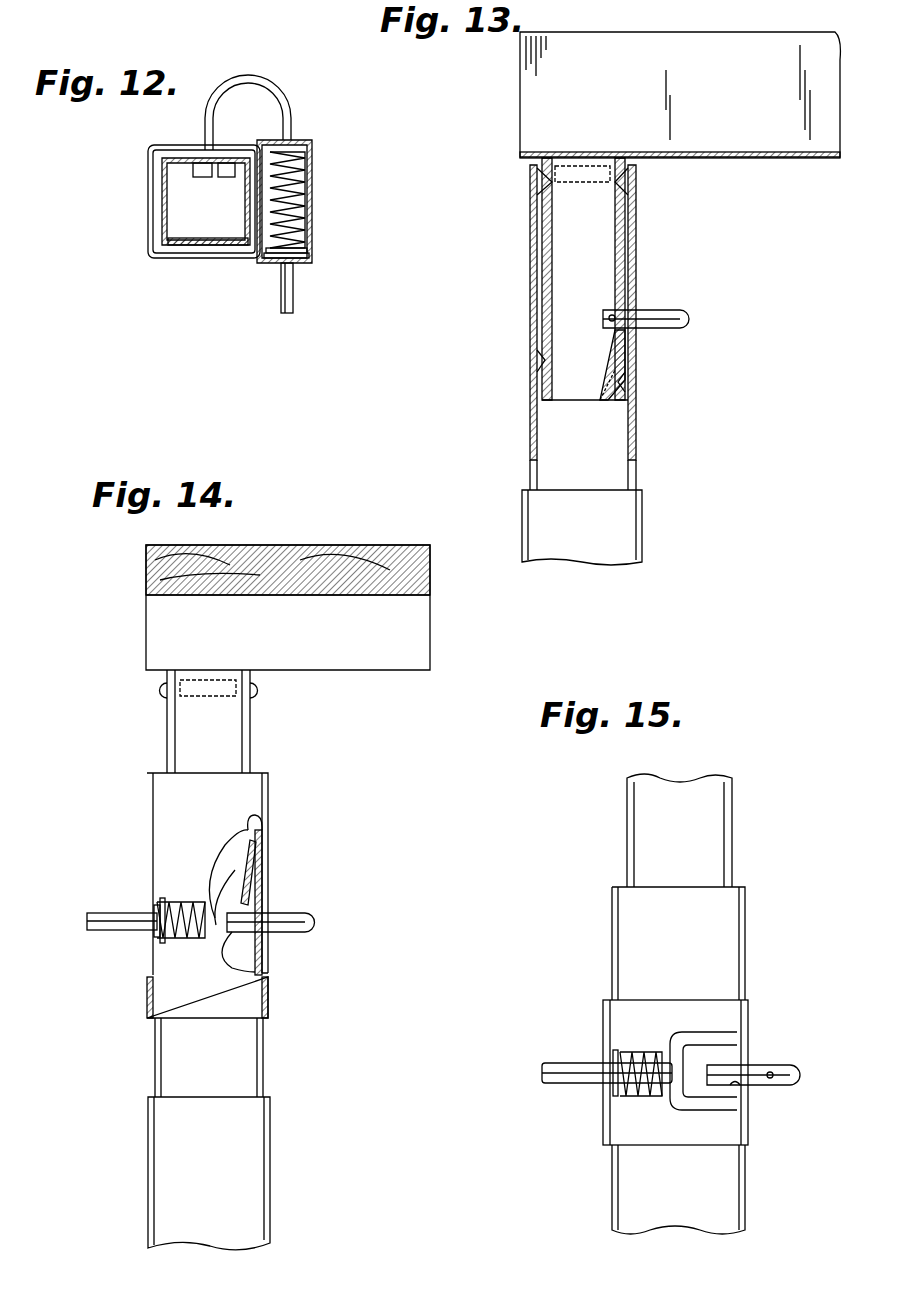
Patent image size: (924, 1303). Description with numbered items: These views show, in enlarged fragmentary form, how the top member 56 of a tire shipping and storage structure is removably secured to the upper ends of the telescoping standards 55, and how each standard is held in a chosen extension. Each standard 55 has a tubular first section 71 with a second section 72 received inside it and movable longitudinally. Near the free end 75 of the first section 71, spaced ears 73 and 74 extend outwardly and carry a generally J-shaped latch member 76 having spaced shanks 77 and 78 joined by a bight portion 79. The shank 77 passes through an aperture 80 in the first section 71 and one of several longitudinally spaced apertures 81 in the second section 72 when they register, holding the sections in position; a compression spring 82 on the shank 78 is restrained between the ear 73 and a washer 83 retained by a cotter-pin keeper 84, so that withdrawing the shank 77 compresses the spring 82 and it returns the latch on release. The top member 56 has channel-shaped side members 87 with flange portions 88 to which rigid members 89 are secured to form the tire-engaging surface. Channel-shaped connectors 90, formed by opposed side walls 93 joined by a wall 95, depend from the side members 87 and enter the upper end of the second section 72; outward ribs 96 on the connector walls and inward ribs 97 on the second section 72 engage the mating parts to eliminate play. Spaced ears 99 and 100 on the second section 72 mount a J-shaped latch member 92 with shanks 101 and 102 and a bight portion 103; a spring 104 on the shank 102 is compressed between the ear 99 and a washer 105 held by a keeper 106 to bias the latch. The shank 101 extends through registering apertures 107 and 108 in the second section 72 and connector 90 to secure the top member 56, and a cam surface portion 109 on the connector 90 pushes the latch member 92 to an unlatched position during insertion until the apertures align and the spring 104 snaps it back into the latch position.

In FIG. 13, the standard 55 is at (644, 527).
In FIG. 14, the standard 55 is at (270, 1192).
In FIG. 14, the top member 56 is at (243, 545).
In FIG. 13, the first section 71 is at (522, 522).
In FIG. 14, the first section 71 is at (270, 1140).
In FIG. 15, the first section 71 is at (746, 935).
In FIG. 13, the second section 72 is at (637, 423).
In FIG. 14, the second section 72 is at (263, 1050).
In FIG. 15, the second section 72 is at (733, 838).
In FIG. 15, the ear 73 is at (748, 1008).
In FIG. 15, the ear 74 is at (603, 1030).
In FIG. 15, the free end 75 is at (608, 862).
In FIG. 15, the latch member 76 is at (540, 1074).
In FIG. 15, the shank 77 is at (762, 1066).
In FIG. 15, the shank 78 is at (560, 1083).
In FIG. 15, the bight portion 79 is at (802, 1077).
In FIG. 15, the aperture 80 is at (740, 1060).
In FIG. 15, the aperture 81 is at (745, 1087).
In FIG. 15, the resilient member 82 is at (660, 1092).
In FIG. 15, the washer 83 is at (626, 1100).
In FIG. 15, the keeper 84 is at (612, 1090).
In FIG. 13, the side member 87 is at (520, 113).
In FIG. 14, the side member 87 is at (146, 637).
In FIG. 14, the flange portion 88 is at (345, 545).
In FIG. 14, the rigid member 89 is at (146, 573).
In FIG. 13, the connector 90 is at (532, 278).
In FIG. 14, the connector 90 is at (250, 718).
In FIG. 12, the latch member 92 is at (305, 110).
In FIG. 14, the latch member 92 is at (302, 815).
In FIG. 12, the side wall 93 is at (160, 150).
In FIG. 13, the side wall 93 is at (545, 240).
In FIG. 14, the side wall 93 is at (167, 720).
In FIG. 12, the wall 95 is at (162, 195).
In FIG. 13, the wall 95 is at (598, 226).
In FIG. 13, the rib 96 is at (535, 192).
In FIG. 14, the rib 96 is at (160, 690).
In FIG. 12, the rib 97 is at (228, 160).
In FIG. 13, the rib 97 is at (538, 355).
In FIG. 12, the ear 99 is at (300, 263).
In FIG. 14, the ear 99 is at (147, 855).
In FIG. 12, the ear 100 is at (308, 140).
In FIG. 14, the ear 100 is at (268, 792).
In FIG. 12, the shank 101 is at (200, 140).
In FIG. 13, the shank 101 is at (645, 310).
In FIG. 14, the shank 101 is at (272, 912).
In FIG. 12, the shank 102 is at (293, 296).
In FIG. 14, the shank 102 is at (125, 915).
In FIG. 12, the bight portion 103 is at (246, 78).
In FIG. 13, the bight portion 103 is at (692, 318).
In FIG. 14, the bight portion 103 is at (318, 924).
In FIG. 12, the resilient member 104 is at (308, 200).
In FIG. 14, the resilient member 104 is at (190, 945).
In FIG. 12, the washer 105 is at (305, 250).
In FIG. 14, the washer 105 is at (163, 948).
In FIG. 12, the keeper 106 is at (309, 256).
In FIG. 14, the keeper 106 is at (155, 938).
In FIG. 13, the aperture 107 is at (636, 300).
In FIG. 14, the aperture 107 is at (265, 890).
In FIG. 13, the aperture 108 is at (610, 315).
In FIG. 14, the aperture 108 is at (265, 820).
In FIG. 13, the cam surface portion 109 is at (614, 402).
In FIG. 14, the cam surface portion 109 is at (238, 932).